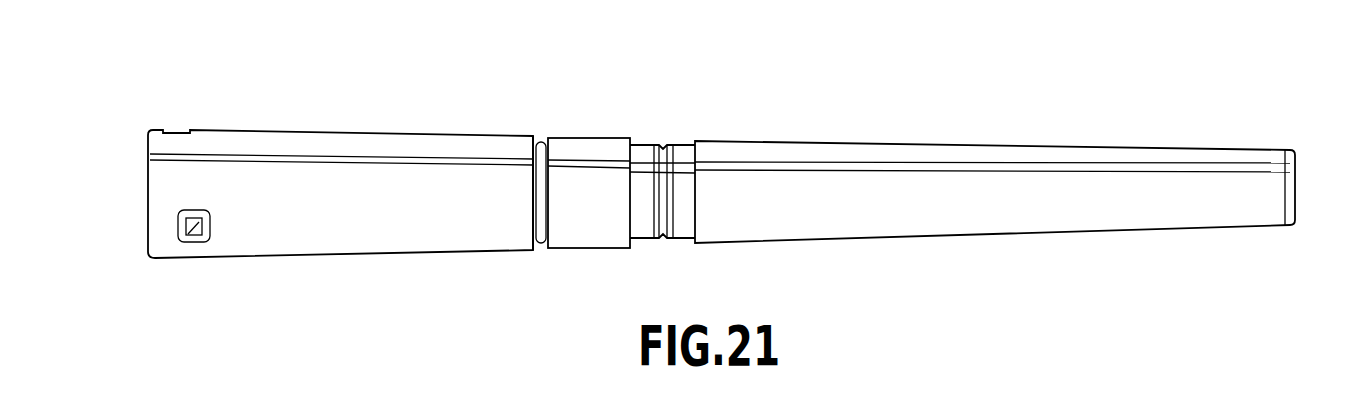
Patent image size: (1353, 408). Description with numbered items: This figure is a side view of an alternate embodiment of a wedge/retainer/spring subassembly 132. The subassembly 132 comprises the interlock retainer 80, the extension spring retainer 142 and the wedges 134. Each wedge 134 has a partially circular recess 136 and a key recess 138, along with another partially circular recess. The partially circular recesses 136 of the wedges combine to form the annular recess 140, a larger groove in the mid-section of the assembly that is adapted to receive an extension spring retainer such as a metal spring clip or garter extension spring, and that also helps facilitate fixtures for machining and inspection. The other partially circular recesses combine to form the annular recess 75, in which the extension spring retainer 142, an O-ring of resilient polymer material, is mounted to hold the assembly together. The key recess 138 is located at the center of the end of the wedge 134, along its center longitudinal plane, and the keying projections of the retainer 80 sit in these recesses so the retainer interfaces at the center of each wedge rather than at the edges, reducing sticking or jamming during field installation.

The wedge/retainer/spring subassembly 132 is at (1042, 87).
The wedge 134 is at (870, 143).
The partially circular recess 136 is at (680, 146).
The annular recess 140 is at (648, 147).
The annular recess 75 is at (543, 142).
The extension spring retainer 142 is at (545, 222).
The interlock retainer 80 is at (189, 238).
The key recess 138 is at (194, 239).